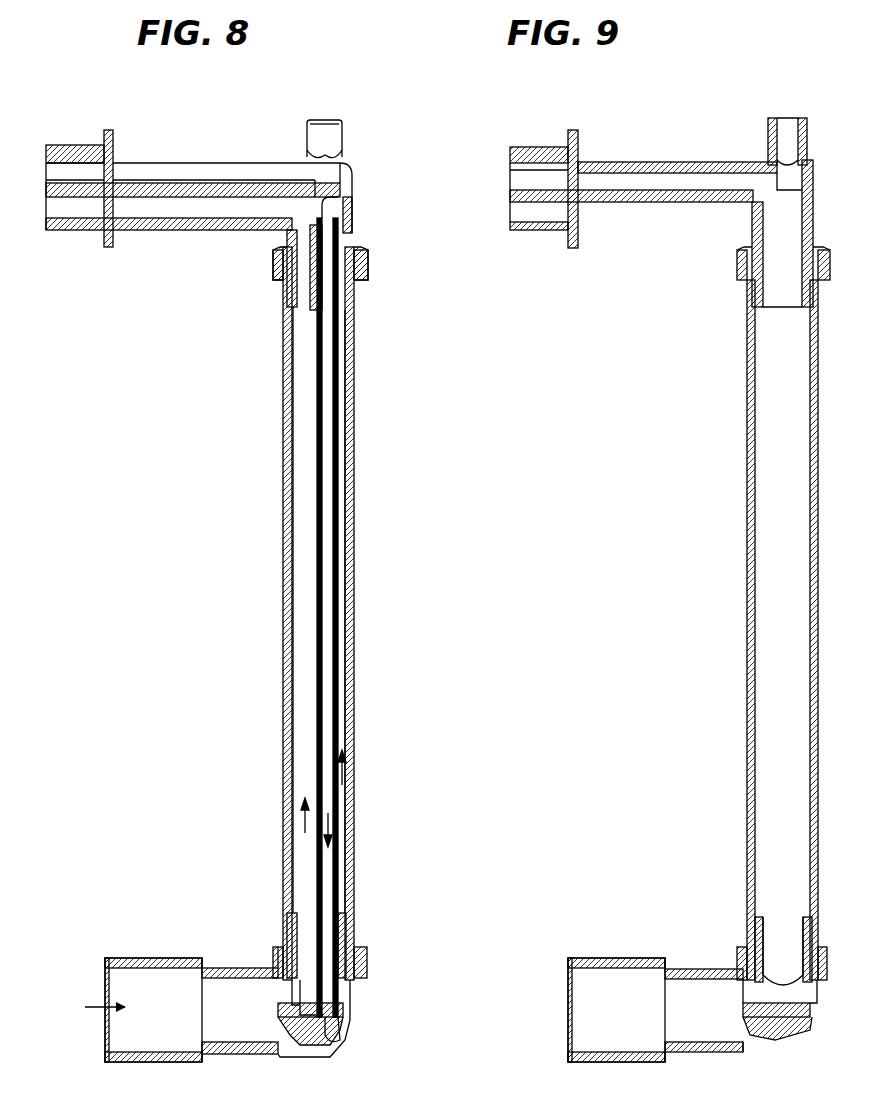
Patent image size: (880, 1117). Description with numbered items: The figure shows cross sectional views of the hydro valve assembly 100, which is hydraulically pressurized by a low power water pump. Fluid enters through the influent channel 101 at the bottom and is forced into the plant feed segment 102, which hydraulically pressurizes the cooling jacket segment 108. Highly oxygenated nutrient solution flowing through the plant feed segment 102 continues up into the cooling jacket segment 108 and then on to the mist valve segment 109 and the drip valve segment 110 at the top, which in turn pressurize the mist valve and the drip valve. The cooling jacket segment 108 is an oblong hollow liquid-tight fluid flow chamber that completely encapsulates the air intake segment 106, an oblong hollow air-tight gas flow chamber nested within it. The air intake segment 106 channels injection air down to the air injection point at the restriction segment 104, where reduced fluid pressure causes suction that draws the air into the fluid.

In FIG. 8, the hydro valve assembly 100 is at (380, 122).
In FIG. 9, the hydro valve assembly 100 is at (545, 662).
In FIG. 8, the influent channel 101 is at (135, 982).
In FIG. 9, the influent channel 101 is at (600, 1007).
In FIG. 8, the plant feed segment 102 is at (288, 985).
In FIG. 9, the plant feed segment 102 is at (752, 990).
In FIG. 8, the restriction segment 104 is at (340, 1040).
In FIG. 8, the air intake segment 106 is at (172, 208).
In FIG. 9, the air intake segment 106 is at (661, 233).
In FIG. 8, the cooling jacket segment 108 is at (303, 853).
In FIG. 9, the cooling jacket segment 108 is at (770, 590).
In FIG. 8, the mist valve segment 109 is at (333, 118).
In FIG. 9, the mist valve segment 109 is at (788, 125).
In FIG. 8, the drip valve segment 110 is at (76, 168).
In FIG. 9, the drip valve segment 110 is at (660, 172).